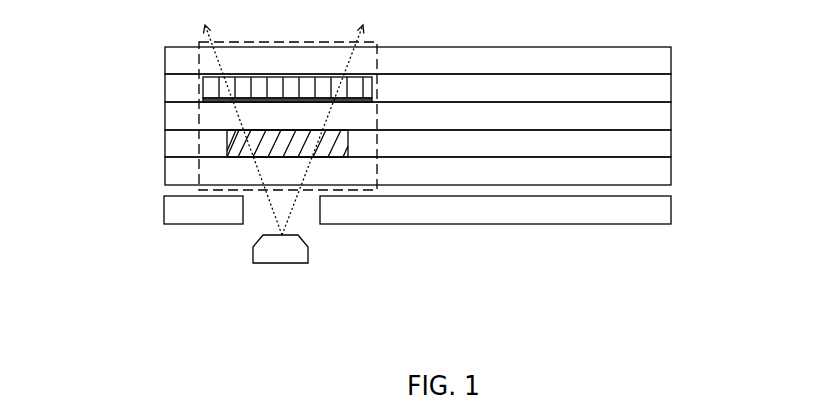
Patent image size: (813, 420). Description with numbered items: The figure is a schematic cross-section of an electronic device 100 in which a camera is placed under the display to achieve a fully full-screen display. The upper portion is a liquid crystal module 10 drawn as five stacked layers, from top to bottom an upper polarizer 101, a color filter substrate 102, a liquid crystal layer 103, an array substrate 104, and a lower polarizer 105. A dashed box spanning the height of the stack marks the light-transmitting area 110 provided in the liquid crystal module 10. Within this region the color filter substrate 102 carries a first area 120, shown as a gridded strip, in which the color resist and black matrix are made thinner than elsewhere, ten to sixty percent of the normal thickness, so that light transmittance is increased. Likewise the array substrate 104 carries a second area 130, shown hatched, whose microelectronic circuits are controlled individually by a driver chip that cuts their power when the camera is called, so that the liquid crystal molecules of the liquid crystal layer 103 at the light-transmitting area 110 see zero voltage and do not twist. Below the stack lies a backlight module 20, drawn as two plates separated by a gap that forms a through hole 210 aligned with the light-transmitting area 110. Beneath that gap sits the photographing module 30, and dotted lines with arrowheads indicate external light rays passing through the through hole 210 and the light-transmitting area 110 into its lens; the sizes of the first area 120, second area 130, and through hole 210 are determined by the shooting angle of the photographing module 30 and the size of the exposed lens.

The electronic device 100 is at (57, 100).
The liquid crystal module 10 is at (441, 103).
The upper polarizer 101 is at (671, 60).
The color filter substrate 102 is at (671, 88).
The liquid crystal layer 103 is at (671, 116).
The array substrate 104 is at (671, 144).
The lower polarizer 105 is at (454, 170).
The light-transmitting area 110 is at (375, 42).
The first area 120 is at (213, 92).
The second area 130 is at (233, 150).
The backlight module 20 is at (671, 210).
The through hole 210 is at (267, 213).
The photographing module 30 is at (309, 248).